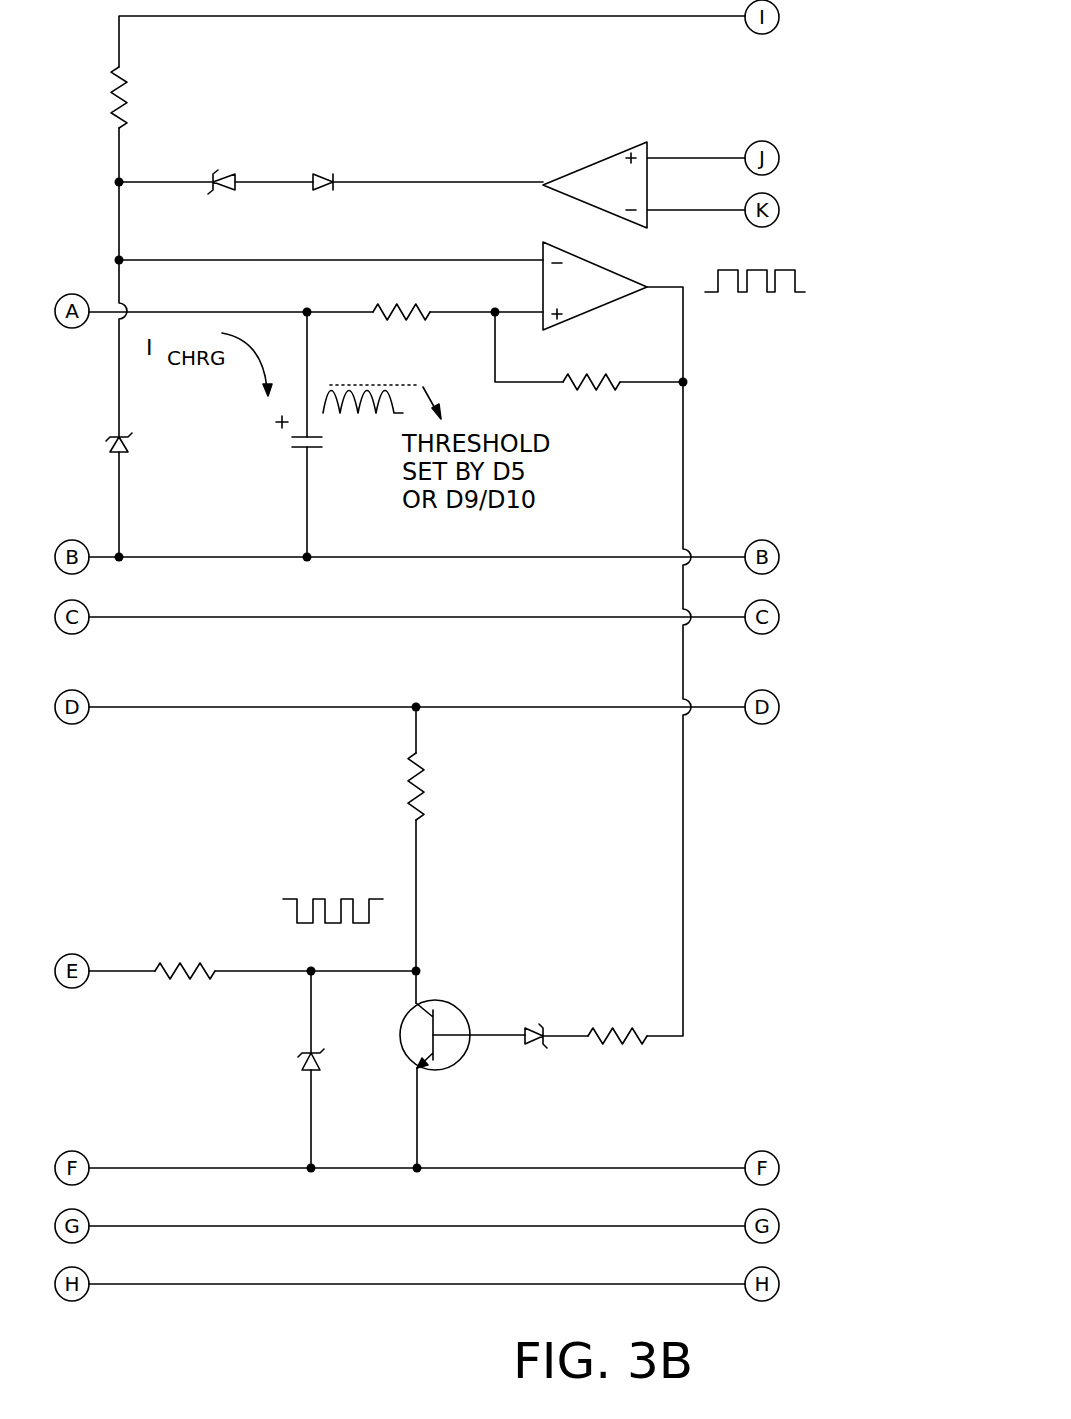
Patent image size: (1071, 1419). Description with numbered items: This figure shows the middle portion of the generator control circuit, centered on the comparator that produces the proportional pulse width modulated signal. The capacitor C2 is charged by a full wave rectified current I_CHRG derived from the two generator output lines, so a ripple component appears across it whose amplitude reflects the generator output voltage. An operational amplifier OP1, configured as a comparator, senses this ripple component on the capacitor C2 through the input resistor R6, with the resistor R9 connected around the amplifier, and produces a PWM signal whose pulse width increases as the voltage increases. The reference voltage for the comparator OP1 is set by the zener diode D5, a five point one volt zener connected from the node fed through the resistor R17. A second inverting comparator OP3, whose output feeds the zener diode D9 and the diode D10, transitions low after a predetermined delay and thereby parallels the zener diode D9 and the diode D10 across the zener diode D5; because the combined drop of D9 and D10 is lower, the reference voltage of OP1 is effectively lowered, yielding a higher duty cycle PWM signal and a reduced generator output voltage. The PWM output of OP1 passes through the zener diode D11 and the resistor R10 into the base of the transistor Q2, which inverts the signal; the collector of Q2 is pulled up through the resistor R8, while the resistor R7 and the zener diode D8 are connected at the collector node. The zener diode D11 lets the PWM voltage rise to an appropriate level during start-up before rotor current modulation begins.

The resistor R17 is at (150, 97).
The zener diode D9 is at (226, 165).
The diode D10 is at (323, 163).
The second inverting comparator OP3 is at (642, 178).
The operational amplifier configured as a comparator OP1 is at (607, 286).
The resistor R6 is at (401, 333).
The feedback resistor R9 is at (591, 397).
The capacitor C2 is at (312, 451).
The zener diode D5 is at (142, 445).
The resistor R8 is at (438, 786).
The resistor R7 is at (185, 957).
The transistor Q2 is at (449, 1032).
The zener diode D8 is at (292, 1073).
The zener diode D11 is at (542, 1053).
The resistor R10 is at (617, 1017).